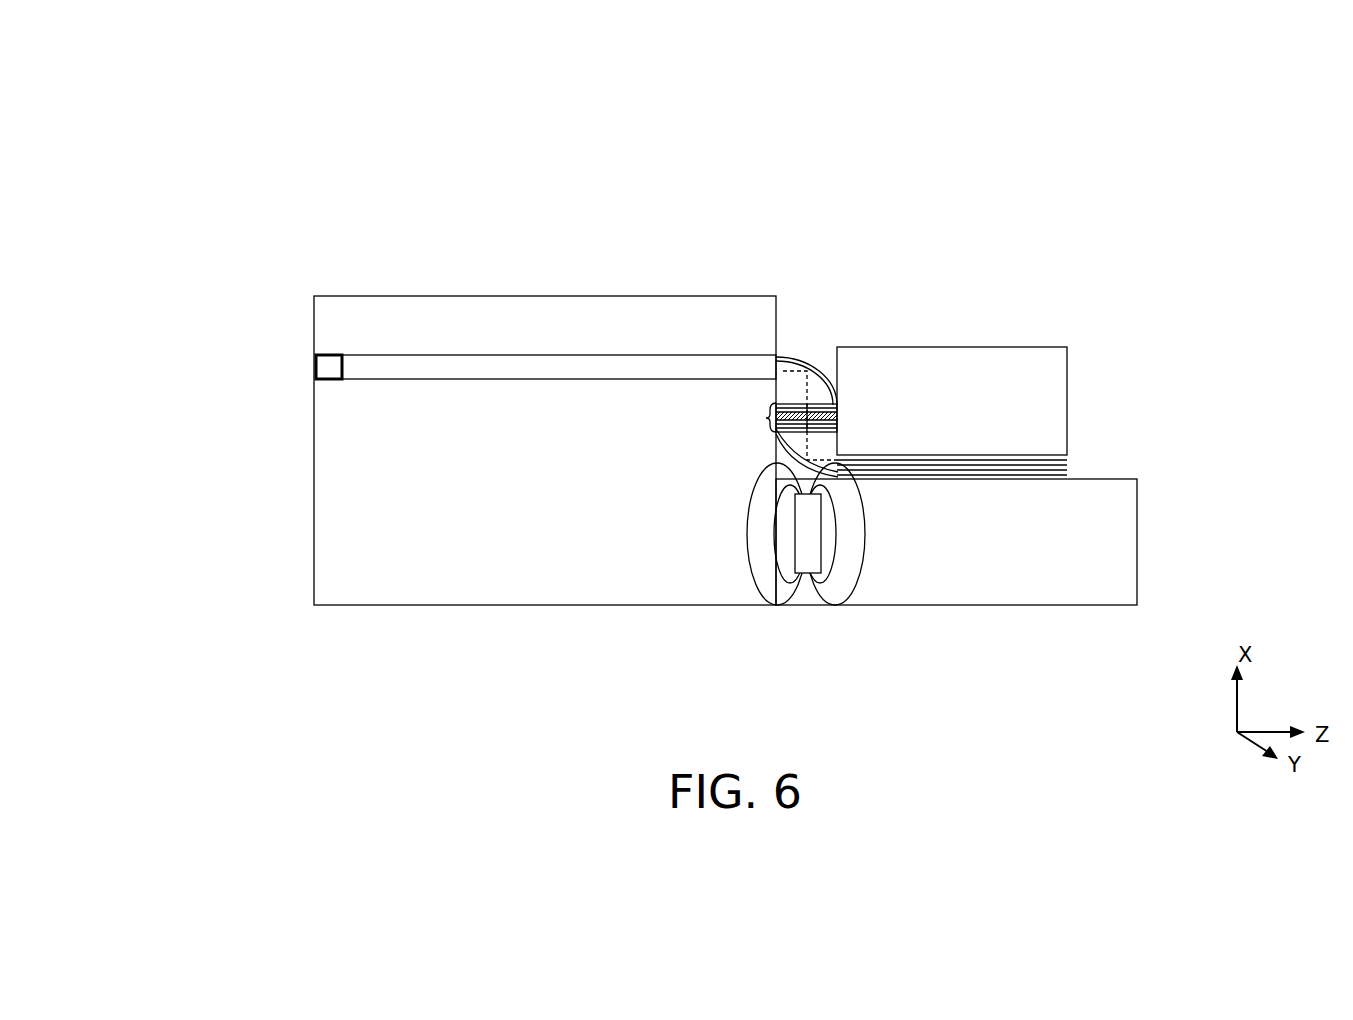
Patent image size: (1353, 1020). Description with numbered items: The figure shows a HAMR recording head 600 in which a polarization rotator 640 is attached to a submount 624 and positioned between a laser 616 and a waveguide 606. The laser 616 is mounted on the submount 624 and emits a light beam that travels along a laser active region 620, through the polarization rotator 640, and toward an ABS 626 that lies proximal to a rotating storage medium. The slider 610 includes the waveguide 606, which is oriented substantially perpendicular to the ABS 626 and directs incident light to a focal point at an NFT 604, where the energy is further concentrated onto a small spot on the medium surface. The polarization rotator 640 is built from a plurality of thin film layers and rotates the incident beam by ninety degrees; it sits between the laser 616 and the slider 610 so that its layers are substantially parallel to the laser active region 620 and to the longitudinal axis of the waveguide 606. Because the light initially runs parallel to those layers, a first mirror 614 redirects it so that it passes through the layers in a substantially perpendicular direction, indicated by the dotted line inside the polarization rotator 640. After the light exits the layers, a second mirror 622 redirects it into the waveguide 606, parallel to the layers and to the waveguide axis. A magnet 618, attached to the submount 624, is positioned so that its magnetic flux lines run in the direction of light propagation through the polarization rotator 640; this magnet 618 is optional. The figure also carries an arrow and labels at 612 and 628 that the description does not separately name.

The HAMR recording head 600 is at (230, 174).
The NFT 604 is at (335, 355).
The waveguide 606 is at (496, 355).
The slider 610 is at (416, 296).
The upper curved flexure 612 is at (797, 355).
The first mirror 614 is at (776, 449).
The laser 616 is at (1020, 347).
The magnet 618 is at (846, 532).
The laser active region 620 is at (1088, 458).
The second mirror 622 is at (837, 380).
The submount 624 is at (1137, 578).
The ABS 626 is at (298, 457).
The coil / layered sensor stack 628 is at (846, 418).
The polarization rotator 640 is at (766, 418).